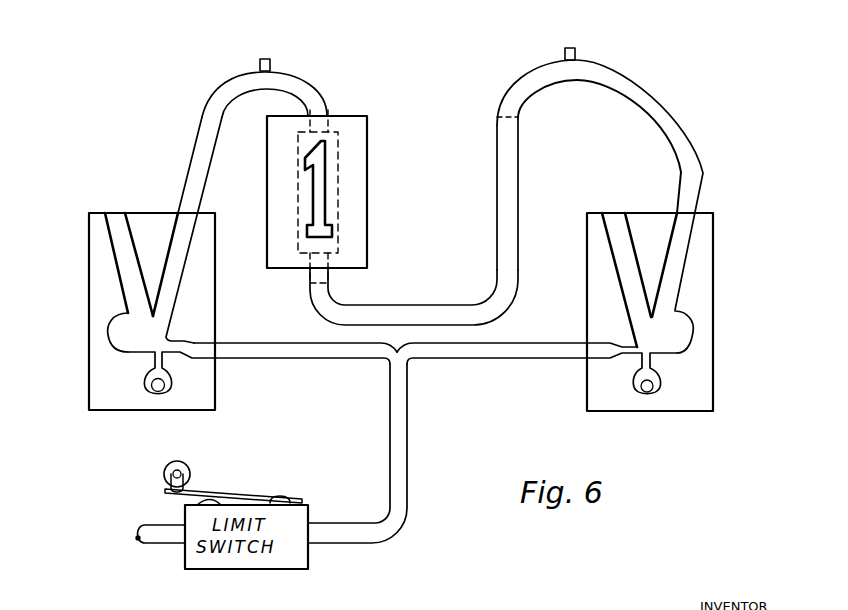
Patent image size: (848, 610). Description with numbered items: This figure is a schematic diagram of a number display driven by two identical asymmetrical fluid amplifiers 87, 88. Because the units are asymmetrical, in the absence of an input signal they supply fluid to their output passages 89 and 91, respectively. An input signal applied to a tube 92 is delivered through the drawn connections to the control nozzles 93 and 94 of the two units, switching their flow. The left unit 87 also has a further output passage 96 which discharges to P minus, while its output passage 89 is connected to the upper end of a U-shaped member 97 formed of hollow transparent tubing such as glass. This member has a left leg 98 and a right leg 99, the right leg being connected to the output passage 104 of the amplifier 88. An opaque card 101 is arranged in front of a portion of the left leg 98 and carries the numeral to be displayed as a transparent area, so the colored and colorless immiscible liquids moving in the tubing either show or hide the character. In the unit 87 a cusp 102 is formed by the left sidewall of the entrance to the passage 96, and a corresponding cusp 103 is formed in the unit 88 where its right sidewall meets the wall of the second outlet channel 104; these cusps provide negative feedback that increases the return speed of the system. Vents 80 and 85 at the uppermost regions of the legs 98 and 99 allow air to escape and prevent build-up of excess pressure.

The vent 80 is at (271, 64).
The vent 85 is at (576, 52).
The fluid amplifier 87 is at (88, 355).
The fluid amplifier 88 is at (720, 318).
The output passage 89 is at (177, 268).
The output passage 91 is at (617, 222).
The tube 92 is at (408, 428).
The control nozzle 93 is at (232, 348).
The control nozzle 94 is at (508, 353).
The output passage 96 is at (118, 222).
The U-shaped member 97 is at (433, 296).
The left leg 98 is at (313, 101).
The right leg 99 is at (508, 163).
The opaque card 101 is at (368, 143).
The cusp 102 is at (122, 328).
The cusp 103 is at (693, 337).
The output passage 104 is at (683, 248).